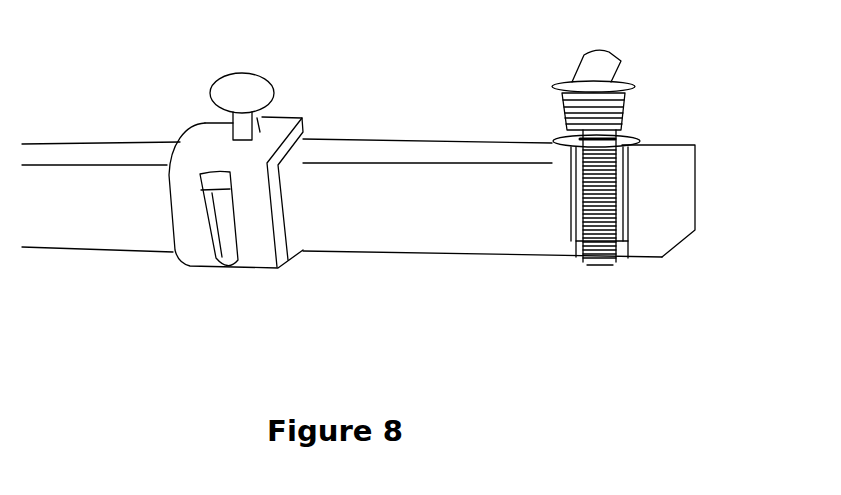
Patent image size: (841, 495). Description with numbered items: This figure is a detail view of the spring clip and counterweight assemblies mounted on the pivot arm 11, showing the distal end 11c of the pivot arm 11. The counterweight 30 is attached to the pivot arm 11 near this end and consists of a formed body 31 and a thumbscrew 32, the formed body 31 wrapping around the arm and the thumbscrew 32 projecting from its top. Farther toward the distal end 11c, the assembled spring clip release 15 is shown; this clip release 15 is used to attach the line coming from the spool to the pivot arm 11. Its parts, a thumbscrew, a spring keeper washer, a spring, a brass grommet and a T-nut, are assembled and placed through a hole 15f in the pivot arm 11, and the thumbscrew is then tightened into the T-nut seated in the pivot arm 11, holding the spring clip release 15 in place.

The pivot arm 11 is at (115, 142).
The distal end of the pivot arm 11c is at (391, 235).
The spring clip release 15 is at (643, 77).
The hole 15f is at (628, 197).
The counterweight 30 is at (297, 103).
The formed body 31 is at (188, 262).
The thumbscrew 32 is at (222, 88).